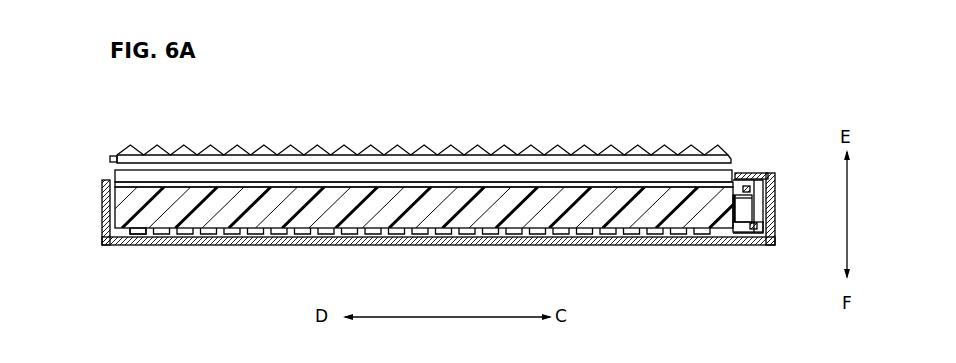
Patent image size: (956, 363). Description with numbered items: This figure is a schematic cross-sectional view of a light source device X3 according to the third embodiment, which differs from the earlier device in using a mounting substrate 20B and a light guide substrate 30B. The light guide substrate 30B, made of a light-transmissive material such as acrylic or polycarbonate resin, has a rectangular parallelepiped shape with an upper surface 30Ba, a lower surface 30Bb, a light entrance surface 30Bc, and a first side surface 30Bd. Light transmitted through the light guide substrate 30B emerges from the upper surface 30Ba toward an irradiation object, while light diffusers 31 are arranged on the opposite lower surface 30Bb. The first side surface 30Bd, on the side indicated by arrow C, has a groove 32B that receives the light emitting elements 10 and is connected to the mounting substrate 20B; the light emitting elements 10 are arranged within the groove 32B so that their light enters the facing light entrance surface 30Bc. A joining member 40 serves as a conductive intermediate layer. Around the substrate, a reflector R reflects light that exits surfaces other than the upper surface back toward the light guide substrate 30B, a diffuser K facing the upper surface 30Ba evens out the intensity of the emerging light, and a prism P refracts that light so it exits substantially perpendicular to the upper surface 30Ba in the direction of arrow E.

The light source device X3 is at (385, 121).
The prism P is at (583, 153).
The diffuser K is at (497, 181).
The upper surface 30Ba is at (130, 186).
The light guide substrate 30B is at (247, 213).
The light diffusers 31 is at (484, 229).
The lower surface 30Bb is at (129, 233).
The first side surface 30Bd is at (106, 213).
The groove 32B is at (773, 220).
The reflector R is at (772, 174).
The mounting substrate 20B is at (757, 202).
The light emitting elements 10 is at (748, 210).
The joining member 40 is at (748, 224).
The light entrance surface 30Bc is at (740, 228).